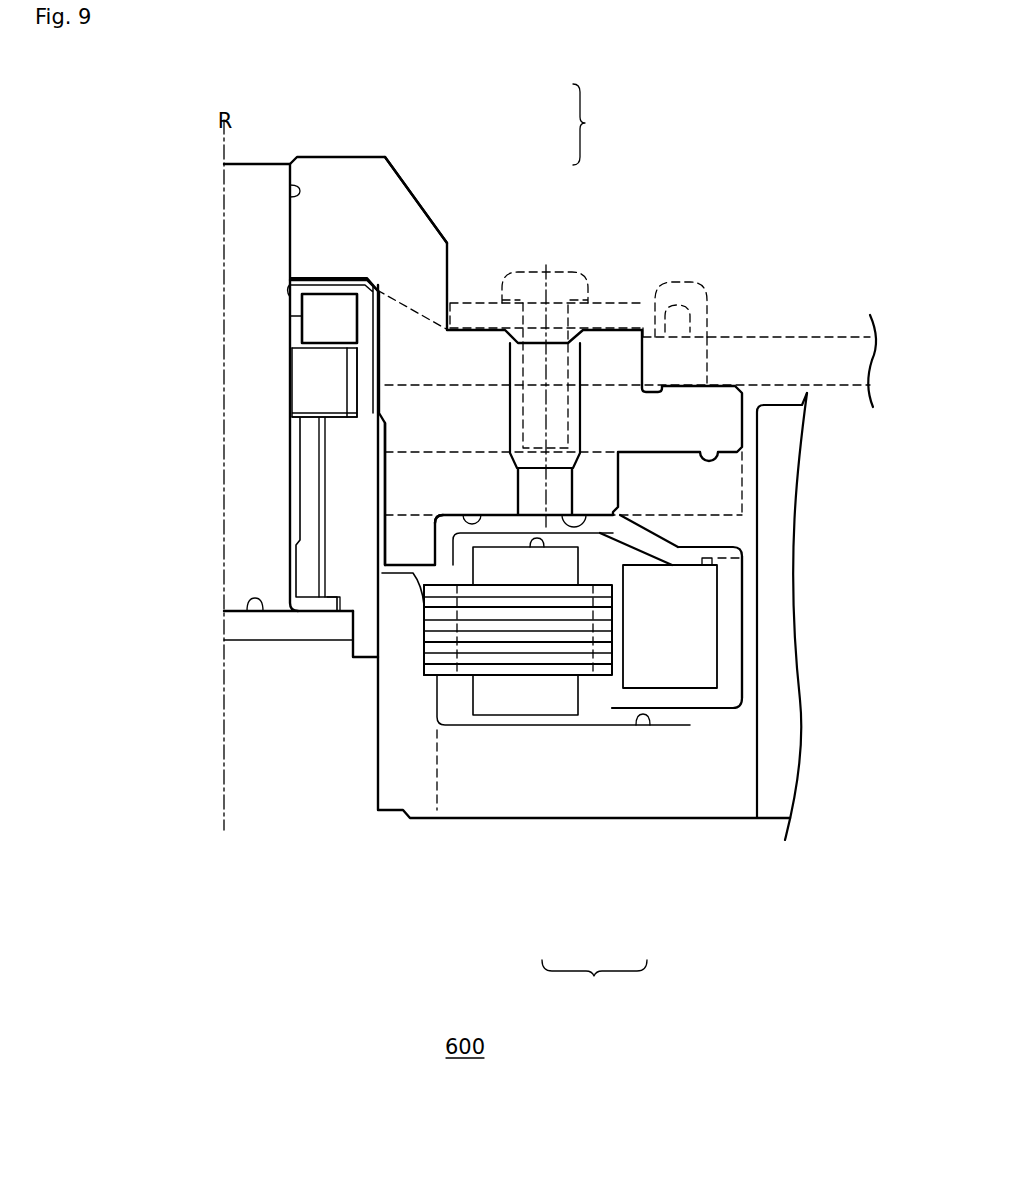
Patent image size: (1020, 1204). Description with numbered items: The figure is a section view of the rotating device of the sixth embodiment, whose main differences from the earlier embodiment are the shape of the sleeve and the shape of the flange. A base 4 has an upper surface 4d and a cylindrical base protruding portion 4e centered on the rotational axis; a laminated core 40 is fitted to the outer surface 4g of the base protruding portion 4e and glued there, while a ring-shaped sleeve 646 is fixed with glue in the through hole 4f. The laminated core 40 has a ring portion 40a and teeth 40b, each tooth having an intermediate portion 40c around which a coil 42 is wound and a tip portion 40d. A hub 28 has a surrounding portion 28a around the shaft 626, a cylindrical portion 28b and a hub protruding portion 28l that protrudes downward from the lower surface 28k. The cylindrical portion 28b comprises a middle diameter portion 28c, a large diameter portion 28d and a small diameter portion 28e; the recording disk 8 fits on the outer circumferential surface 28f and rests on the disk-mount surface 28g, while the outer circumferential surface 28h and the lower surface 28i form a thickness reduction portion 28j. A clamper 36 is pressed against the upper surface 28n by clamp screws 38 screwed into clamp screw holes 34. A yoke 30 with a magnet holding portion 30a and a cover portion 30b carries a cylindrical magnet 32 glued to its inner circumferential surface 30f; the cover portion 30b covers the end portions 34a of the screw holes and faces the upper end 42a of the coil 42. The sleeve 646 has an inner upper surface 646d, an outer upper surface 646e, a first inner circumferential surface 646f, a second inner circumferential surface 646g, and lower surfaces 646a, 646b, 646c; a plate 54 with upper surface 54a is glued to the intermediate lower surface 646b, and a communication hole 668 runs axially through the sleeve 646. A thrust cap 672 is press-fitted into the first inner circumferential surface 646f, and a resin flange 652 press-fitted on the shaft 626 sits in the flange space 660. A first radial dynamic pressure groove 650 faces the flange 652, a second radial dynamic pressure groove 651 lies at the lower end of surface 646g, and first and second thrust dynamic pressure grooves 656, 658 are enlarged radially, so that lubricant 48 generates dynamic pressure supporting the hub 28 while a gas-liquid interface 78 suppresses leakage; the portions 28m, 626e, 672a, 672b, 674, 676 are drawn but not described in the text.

The base 4 is at (760, 805).
The upper surface of the base 4d is at (642, 725).
The base protruding portion 4e is at (413, 780).
The through hole 4f is at (381, 700).
The outer surface of the base protruding portion 4g is at (548, 703).
The recording disk 8 is at (790, 337).
The hub 28 is at (343, 250).
The surrounding portion 28a is at (392, 215).
The cylindrical portion 28b is at (603, 124).
The middle diameter portion 28c is at (466, 360).
The large diameter portion 28d is at (478, 425).
The small diameter portion 28e is at (490, 470).
The outer circumferential surface of the middle diameter portion 28f is at (655, 363).
The disk-mount surface 28g is at (690, 385).
The outer circumferential surface of the small diameter portion 28h is at (617, 480).
The lower surface of the large diameter portion 28i is at (718, 470).
The thickness reduction portion 28j is at (715, 495).
The lower surface of the cylindrical portion 28k is at (463, 515).
The hub protruding portion 28l is at (410, 535).
The flange 28m is at (266, 172).
The upper surface of the cylindrical portion 28n is at (630, 330).
The yoke 30 is at (728, 593).
The magnet holding portion 30a is at (732, 643).
The cover portion 30b is at (610, 527).
The inner circumferential surface of the magnet holding portion 30f is at (703, 627).
The cylindrical magnet 32 is at (670, 690).
The clamp screw holes 34 is at (558, 365).
The end portions of the clamp screw holes 34a is at (590, 510).
The clamper 36 is at (603, 300).
The clamp screws 38 is at (540, 272).
The laminated core 40 is at (485, 647).
The ring portion 40a is at (430, 648).
The teeth 40b is at (594, 982).
The intermediate portion 40c is at (557, 657).
The tip portion 40d is at (598, 657).
The coil 42 is at (498, 693).
The upper end of the coil 42a is at (543, 560).
The lubricant 48 is at (302, 318).
The plate 54 is at (250, 622).
The upper surface of the plate 54a is at (263, 612).
The gas-liquid interface 78 is at (290, 308).
The shaft 626 is at (240, 230).
The cover protrusion 626e is at (290, 190).
The sleeve 646 is at (310, 490).
The inner lower surface 646a is at (332, 597).
The intermediate lower surface 646b is at (338, 613).
The outer lower surface 646c is at (373, 660).
The inner upper surface 646d is at (295, 398).
The outer upper surface 646e is at (360, 280).
The first inner circumferential surface 646f is at (368, 283).
The second inner circumferential surface 646g is at (297, 468).
The first radial dynamic pressure groove 650 is at (338, 425).
The second radial dynamic pressure groove 651 is at (300, 565).
The flange 652 is at (300, 378).
The first thrust dynamic pressure groove 656 is at (292, 342).
The second thrust dynamic pressure groove 658 is at (300, 430).
The flange space 660 is at (300, 366).
The communication hole 668 is at (330, 578).
The thrust cap 672 is at (328, 330).
The retainer portion 672a is at (300, 292).
The retainer portion 672b is at (315, 300).
The plate 674 is at (288, 300).
The seal 676 is at (292, 325).